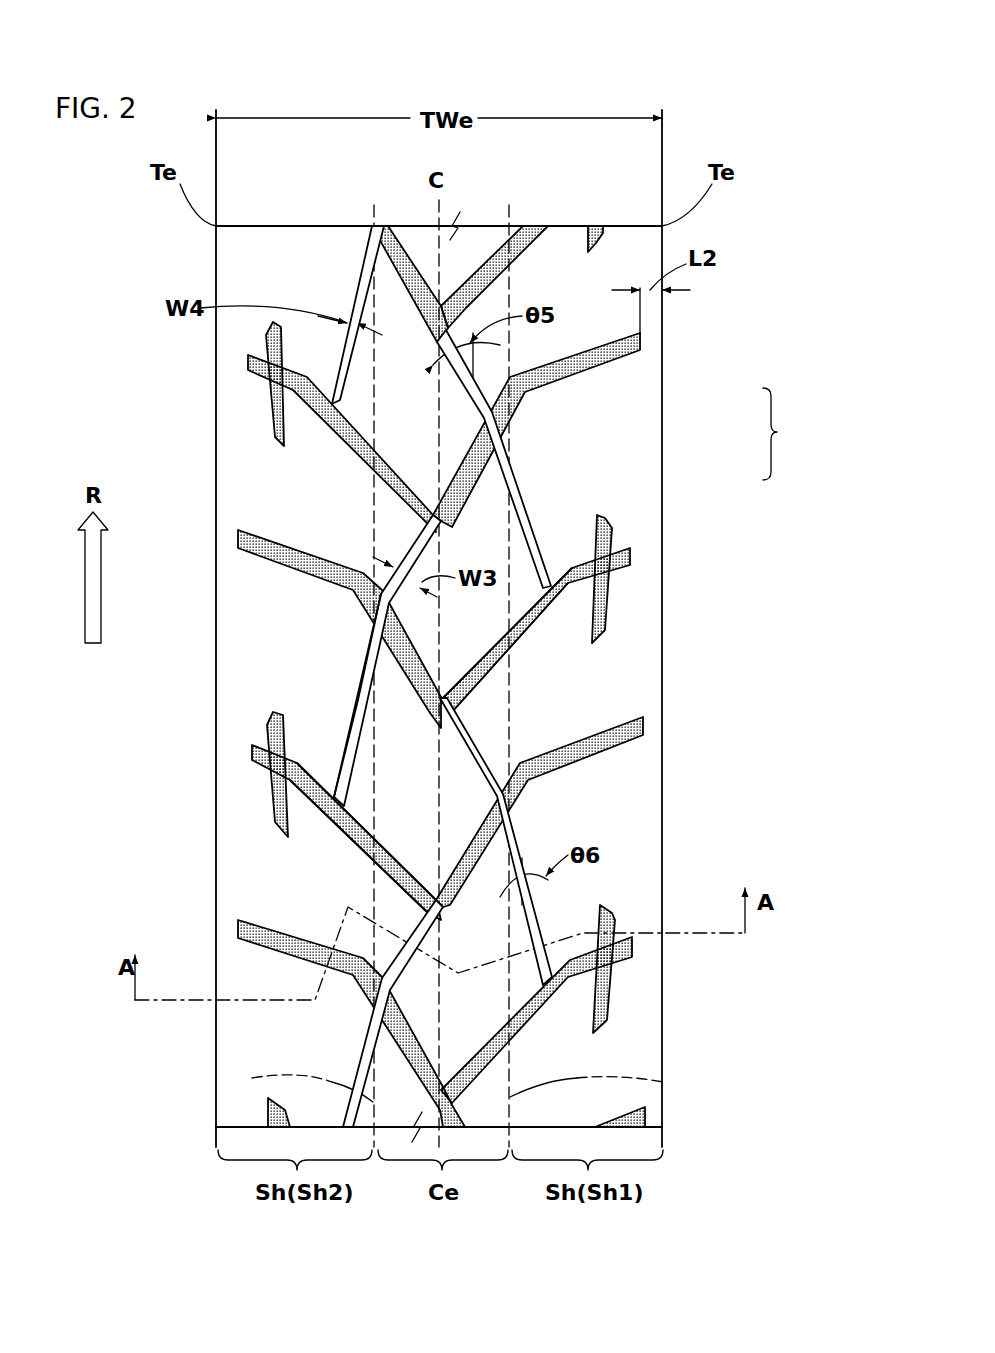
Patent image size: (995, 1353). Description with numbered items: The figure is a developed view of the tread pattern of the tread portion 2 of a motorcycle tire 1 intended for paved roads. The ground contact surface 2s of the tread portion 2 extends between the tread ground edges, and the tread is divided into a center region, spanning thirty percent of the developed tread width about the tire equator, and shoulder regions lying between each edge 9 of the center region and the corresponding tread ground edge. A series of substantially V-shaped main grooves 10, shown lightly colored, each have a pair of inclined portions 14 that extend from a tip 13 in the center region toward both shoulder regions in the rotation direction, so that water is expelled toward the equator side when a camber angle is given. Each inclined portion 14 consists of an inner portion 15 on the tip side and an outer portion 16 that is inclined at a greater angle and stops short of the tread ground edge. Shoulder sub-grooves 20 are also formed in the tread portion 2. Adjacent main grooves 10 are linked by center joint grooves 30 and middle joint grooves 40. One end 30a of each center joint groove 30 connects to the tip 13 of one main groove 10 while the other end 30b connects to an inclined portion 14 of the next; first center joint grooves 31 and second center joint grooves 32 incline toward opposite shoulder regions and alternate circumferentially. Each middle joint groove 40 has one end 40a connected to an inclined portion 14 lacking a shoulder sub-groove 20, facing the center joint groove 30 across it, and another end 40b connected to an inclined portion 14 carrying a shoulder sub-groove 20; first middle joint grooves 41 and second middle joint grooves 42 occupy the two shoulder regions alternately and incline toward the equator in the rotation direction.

The motorcycle tire 1 is at (588, 222).
The tread portion 2 is at (439, 628).
The ground contact surface 2s is at (300, 245).
The edge of center region 9 is at (252, 1078).
The main groove 10 is at (469, 676).
The tip 13 is at (440, 712).
The inclined portion 14 is at (718, 365).
The inner portion 15 is at (485, 468).
The outer portion 16 is at (550, 364).
The shoulder sub-groove 20 is at (266, 405).
The center joint groove 30 is at (459, 676).
The one end of center joint groove 30a is at (475, 672).
The other end of center joint groove 30b is at (505, 778).
The first center joint groove 31 is at (570, 372).
The second center joint groove 32 is at (425, 520).
The middle joint groove 40 is at (447, 676).
The one end of middle joint groove 40a is at (356, 597).
The other end of middle joint groove 40b is at (322, 806).
The first middle joint groove 41 is at (525, 525).
The second middle joint groove 42 is at (358, 328).